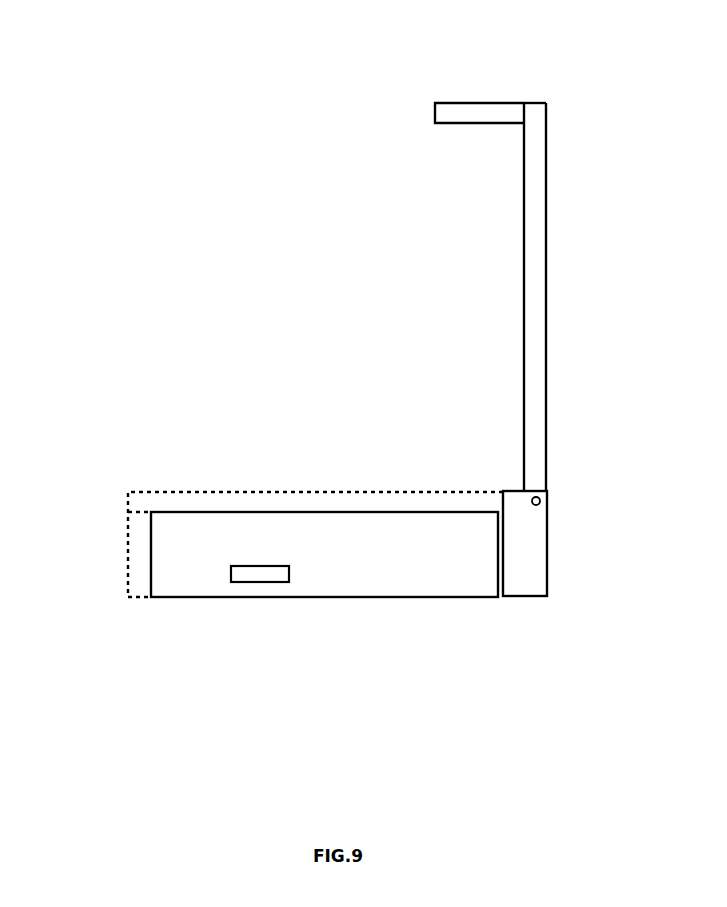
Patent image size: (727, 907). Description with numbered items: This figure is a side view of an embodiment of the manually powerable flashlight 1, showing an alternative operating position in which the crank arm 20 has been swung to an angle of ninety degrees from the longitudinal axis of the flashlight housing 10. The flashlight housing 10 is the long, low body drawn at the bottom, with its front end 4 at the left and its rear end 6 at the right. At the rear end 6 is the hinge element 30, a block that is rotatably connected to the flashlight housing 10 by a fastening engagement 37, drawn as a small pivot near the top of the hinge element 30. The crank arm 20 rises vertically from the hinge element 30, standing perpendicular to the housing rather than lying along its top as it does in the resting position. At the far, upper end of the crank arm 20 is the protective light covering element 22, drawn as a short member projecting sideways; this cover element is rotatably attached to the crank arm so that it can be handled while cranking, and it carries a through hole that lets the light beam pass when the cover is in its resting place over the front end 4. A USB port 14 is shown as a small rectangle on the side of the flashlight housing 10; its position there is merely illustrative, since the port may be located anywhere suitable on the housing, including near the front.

The manually powerable flashlight 1 is at (271, 473).
The front end 4 is at (103, 601).
The rear end 6 is at (576, 602).
The flashlight housing 10 is at (362, 570).
The USB port 14 is at (250, 575).
The crank arm 20 is at (530, 328).
The protective light covering element 22 is at (487, 107).
The hinge element 30 is at (532, 555).
The fastening engagement 37 is at (542, 497).